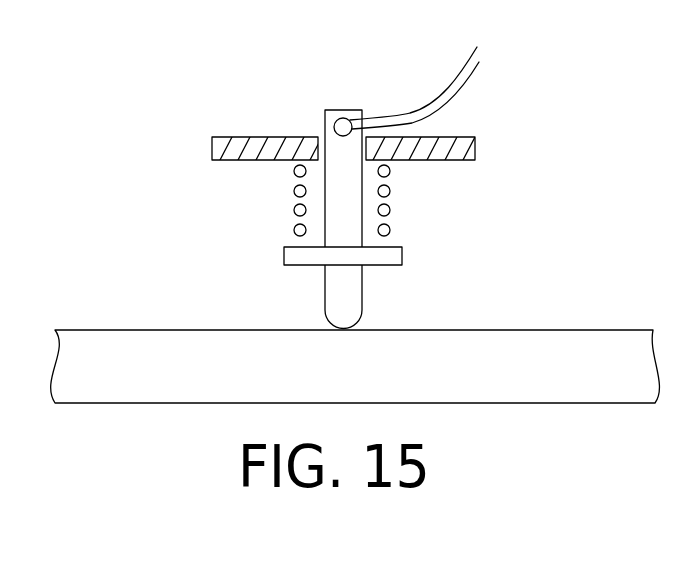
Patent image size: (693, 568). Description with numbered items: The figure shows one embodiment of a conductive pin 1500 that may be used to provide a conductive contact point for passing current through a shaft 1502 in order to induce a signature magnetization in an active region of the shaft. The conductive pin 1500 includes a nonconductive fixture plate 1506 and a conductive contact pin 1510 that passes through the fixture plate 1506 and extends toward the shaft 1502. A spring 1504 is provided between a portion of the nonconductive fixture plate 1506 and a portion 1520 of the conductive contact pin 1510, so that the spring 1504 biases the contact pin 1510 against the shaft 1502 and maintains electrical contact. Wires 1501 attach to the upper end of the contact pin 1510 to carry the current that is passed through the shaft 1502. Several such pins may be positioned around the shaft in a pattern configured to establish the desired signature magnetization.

The conductive pin 1500 is at (311, 186).
The wires 1501 is at (404, 112).
The shaft 1502 is at (548, 350).
The spring 1504 is at (396, 210).
The nonconductive fixture plate 1506 is at (260, 138).
The conductive contact pin 1510 is at (360, 293).
The portion of the conductive contact pin 1520 is at (402, 248).